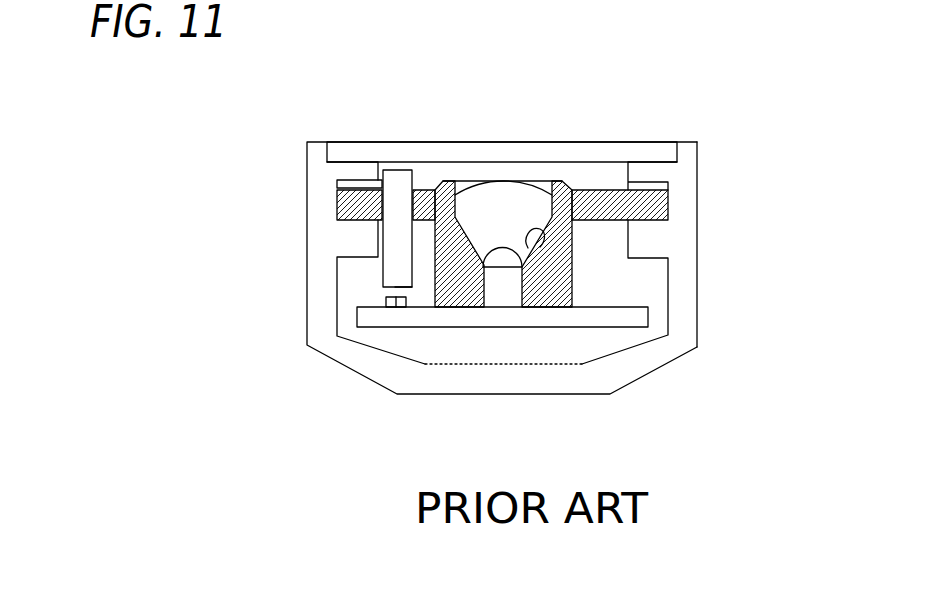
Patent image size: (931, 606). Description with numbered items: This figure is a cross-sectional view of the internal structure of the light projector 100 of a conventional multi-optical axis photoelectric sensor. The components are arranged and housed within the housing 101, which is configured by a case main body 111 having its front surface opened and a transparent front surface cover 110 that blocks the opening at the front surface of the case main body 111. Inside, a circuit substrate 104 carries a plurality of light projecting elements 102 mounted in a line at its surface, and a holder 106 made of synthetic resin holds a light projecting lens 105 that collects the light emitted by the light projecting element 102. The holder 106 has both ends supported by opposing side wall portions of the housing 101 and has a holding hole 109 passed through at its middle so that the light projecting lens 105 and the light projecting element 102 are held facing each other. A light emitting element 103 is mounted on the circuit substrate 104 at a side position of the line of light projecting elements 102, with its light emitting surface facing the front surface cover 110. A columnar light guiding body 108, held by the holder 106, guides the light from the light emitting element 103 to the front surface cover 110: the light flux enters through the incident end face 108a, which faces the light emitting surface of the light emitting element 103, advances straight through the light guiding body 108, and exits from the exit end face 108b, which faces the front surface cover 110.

The light projector 100 is at (702, 162).
The housing 101 is at (308, 278).
The light projecting element 102 is at (503, 293).
The light emitting element 103 is at (396, 308).
The circuit substrate 104 is at (628, 318).
The light projecting lens 105 is at (480, 195).
The holder 106 is at (668, 205).
The light guiding body 108 is at (385, 238).
The incident end face 108a is at (395, 286).
The exit end face 108b is at (376, 185).
The holding hole 109 is at (527, 247).
The front surface cover 110 is at (536, 150).
The case main body 111 is at (687, 252).